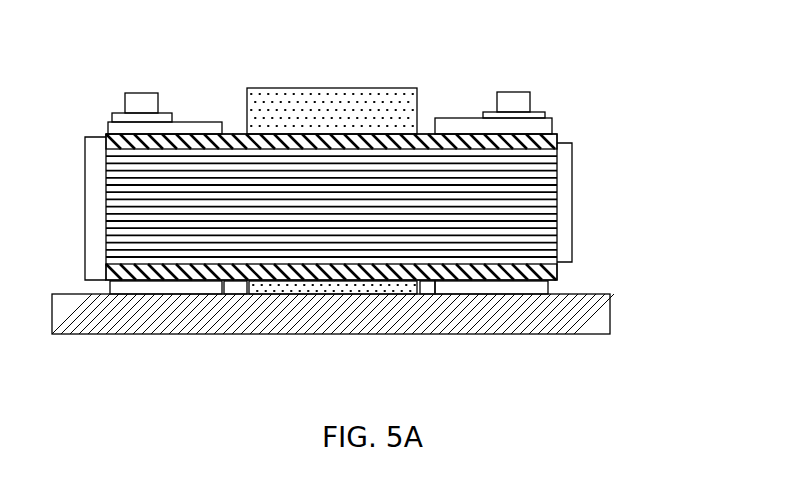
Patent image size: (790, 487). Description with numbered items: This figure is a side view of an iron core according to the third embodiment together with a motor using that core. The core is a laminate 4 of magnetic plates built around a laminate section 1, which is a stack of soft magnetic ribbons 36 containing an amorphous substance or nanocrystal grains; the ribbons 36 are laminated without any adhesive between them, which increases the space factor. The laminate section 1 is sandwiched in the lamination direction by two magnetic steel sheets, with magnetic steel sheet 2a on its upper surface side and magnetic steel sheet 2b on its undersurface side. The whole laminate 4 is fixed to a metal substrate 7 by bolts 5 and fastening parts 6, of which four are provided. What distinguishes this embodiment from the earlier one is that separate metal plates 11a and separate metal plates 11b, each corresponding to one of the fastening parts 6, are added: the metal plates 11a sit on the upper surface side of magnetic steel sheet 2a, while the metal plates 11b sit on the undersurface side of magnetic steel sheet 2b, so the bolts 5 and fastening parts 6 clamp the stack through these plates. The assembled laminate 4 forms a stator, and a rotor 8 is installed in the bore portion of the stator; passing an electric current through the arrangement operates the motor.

The laminate section 1 is at (572, 203).
The magnetic steel sheet 2a is at (557, 134).
The magnetic steel sheet 2b is at (557, 268).
The laminate 4 is at (85, 210).
The bolt 5 is at (510, 90).
The fastening part 6 is at (543, 107).
The metal substrate 7 is at (347, 334).
The rotor 8 is at (323, 90).
The metal plate 11a is at (552, 121).
The metal plate 11b is at (548, 285).
The soft magnetic ribbon 36 is at (233, 167).